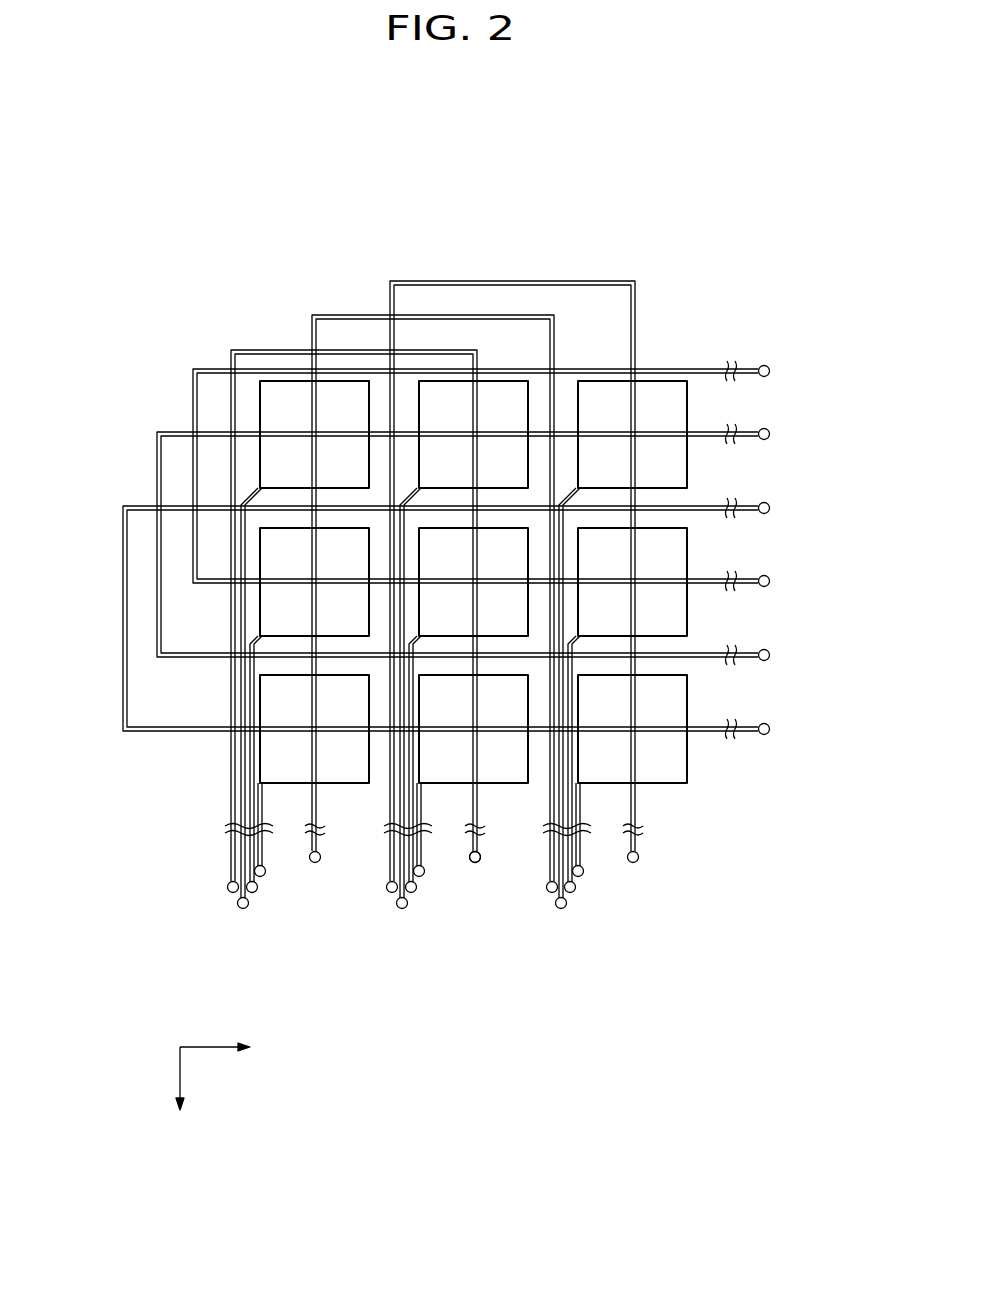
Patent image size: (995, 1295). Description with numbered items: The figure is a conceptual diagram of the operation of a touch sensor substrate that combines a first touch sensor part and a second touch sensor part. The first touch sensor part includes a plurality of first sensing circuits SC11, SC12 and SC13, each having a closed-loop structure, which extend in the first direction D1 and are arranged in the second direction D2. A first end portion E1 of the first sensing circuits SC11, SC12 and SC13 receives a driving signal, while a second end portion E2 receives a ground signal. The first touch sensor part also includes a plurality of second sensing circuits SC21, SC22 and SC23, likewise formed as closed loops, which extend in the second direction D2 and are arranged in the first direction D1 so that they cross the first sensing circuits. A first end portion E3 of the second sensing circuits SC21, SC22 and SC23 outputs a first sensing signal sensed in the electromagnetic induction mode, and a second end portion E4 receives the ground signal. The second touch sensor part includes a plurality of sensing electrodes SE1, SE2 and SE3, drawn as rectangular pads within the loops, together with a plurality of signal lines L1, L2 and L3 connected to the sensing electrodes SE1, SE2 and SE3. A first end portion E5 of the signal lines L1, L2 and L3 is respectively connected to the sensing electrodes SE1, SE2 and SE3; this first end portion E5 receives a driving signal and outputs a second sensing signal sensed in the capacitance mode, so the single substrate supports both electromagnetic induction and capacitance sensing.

The first sensing circuit SC11 is at (193, 405).
The first sensing circuit SC12 is at (157, 467).
The first sensing circuit SC13 is at (123, 542).
The second sensing circuit SC21 is at (294, 350).
The second sensing circuit SC22 is at (357, 315).
The second sensing circuit SC23 is at (437, 281).
The sensing electrode SE1 is at (268, 392).
The sensing electrode SE2 is at (508, 390).
The sensing electrode SE3 is at (670, 392).
The signal line L1 is at (241, 807).
The signal line L2 is at (400, 807).
The signal line L3 is at (559, 807).
The first end portion of the first sensing circuits E1 is at (770, 371).
The second end portion of the first sensing circuits E2 is at (770, 581).
The first end portion of the second sensing circuits E3 is at (227, 887).
The second end portion of the second sensing circuits E4 is at (475, 863).
The first end portion of the signal lines E5 is at (243, 909).
The first direction D1 is at (229, 1047).
The second direction D2 is at (182, 1094).